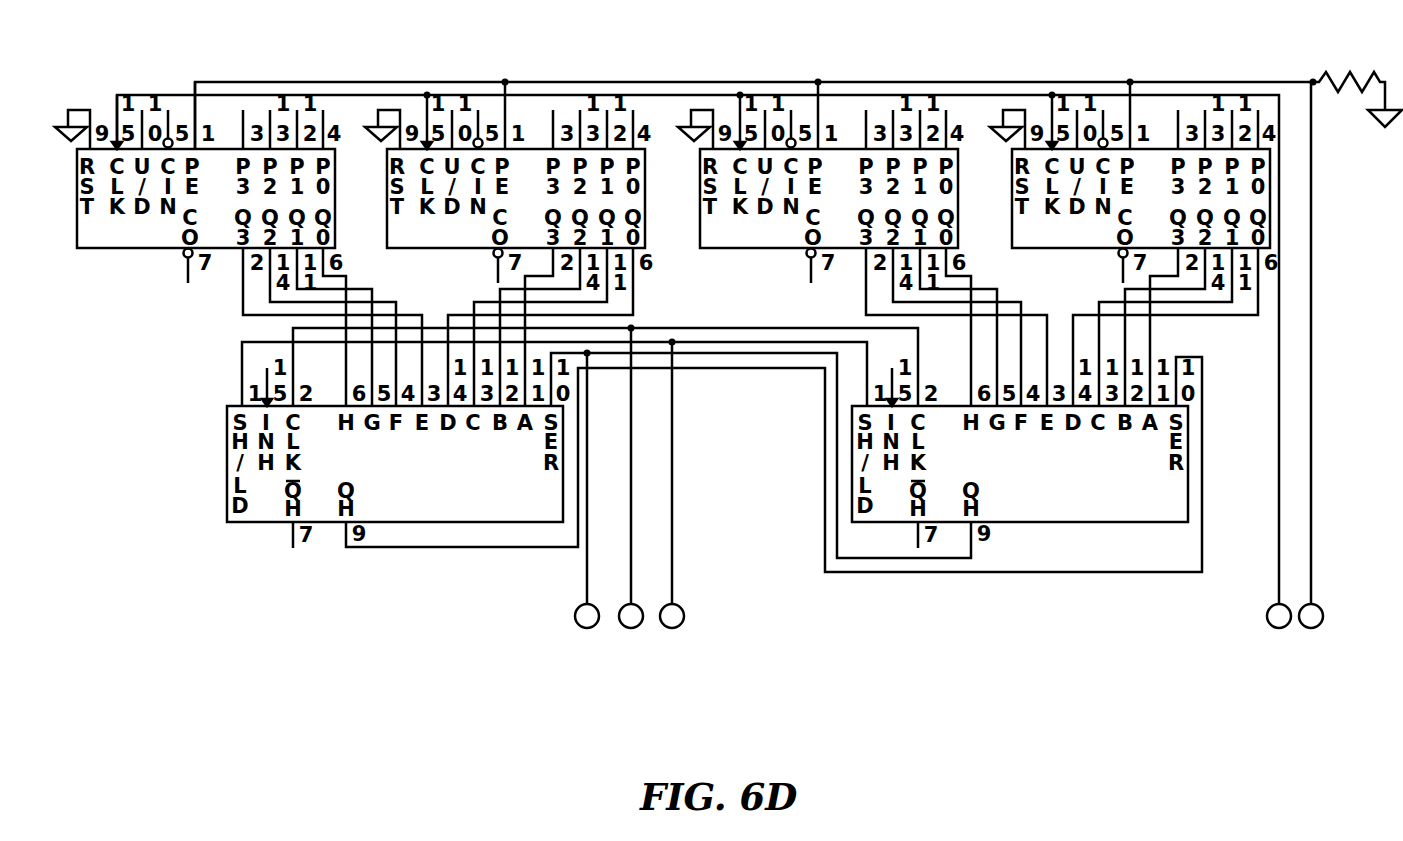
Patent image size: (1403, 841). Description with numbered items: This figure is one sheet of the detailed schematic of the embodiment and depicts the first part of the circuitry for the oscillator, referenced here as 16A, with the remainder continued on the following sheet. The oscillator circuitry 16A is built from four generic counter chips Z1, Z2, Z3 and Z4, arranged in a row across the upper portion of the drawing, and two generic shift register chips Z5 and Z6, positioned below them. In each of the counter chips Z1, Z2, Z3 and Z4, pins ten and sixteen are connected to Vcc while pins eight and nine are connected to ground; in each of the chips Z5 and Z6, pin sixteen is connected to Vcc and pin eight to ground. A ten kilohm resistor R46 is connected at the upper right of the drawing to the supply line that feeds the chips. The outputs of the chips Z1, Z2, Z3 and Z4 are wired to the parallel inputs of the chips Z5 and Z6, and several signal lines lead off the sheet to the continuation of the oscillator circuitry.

The oscillator circuitry 16A is at (153, 373).
The 4516 chip Z1 is at (822, 188).
The 4516 chip Z2 is at (1134, 188).
The 4516 chip Z3 is at (199, 188).
The 4516 chip Z4 is at (509, 188).
The 165 chip Z5 is at (1043, 452).
The 165 chip Z6 is at (384, 452).
The resistor R46 is at (1357, 89).